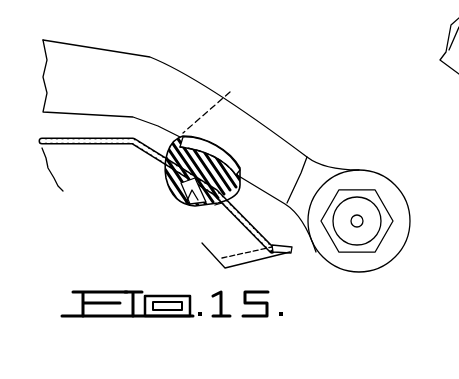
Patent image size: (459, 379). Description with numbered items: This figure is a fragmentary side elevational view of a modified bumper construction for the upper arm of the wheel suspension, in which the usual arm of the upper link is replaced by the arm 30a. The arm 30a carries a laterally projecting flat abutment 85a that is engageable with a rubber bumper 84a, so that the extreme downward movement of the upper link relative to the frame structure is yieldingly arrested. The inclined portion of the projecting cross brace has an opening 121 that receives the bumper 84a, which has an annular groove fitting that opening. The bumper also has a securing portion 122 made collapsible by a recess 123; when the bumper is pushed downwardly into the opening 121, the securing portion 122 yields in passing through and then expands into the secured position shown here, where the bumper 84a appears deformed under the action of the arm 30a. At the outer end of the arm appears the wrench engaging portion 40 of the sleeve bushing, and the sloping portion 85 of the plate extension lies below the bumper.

The arm 30a is at (83, 54).
The wrench engaging portion 40 is at (370, 208).
The outwardly and downwardly sloping portion 85 is at (243, 214).
The flat abutment 85a is at (222, 107).
The rubber bumper 84a is at (237, 167).
The securing portion 122 is at (174, 182).
The recess 123 is at (190, 193).
The opening 121 is at (218, 197).